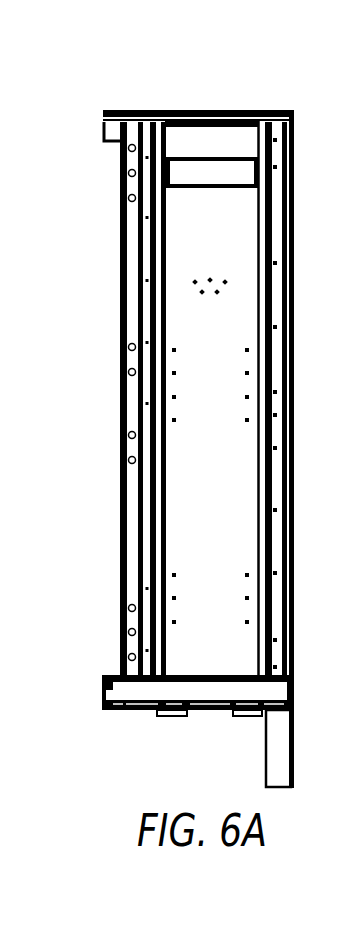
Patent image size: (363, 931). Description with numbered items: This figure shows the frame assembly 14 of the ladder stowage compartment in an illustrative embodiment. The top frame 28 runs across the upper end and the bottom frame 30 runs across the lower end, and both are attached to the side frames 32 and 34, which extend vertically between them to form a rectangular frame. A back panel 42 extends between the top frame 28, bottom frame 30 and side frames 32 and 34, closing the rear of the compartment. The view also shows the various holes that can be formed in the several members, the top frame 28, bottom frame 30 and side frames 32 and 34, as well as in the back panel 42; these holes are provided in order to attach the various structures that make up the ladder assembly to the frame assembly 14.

The frame assembly 14 is at (193, 406).
The top frame 28 is at (123, 118).
The bottom frame 30 is at (138, 707).
The side frame 32 is at (270, 440).
The side frame 34 is at (120, 496).
The back panel 42 is at (223, 353).